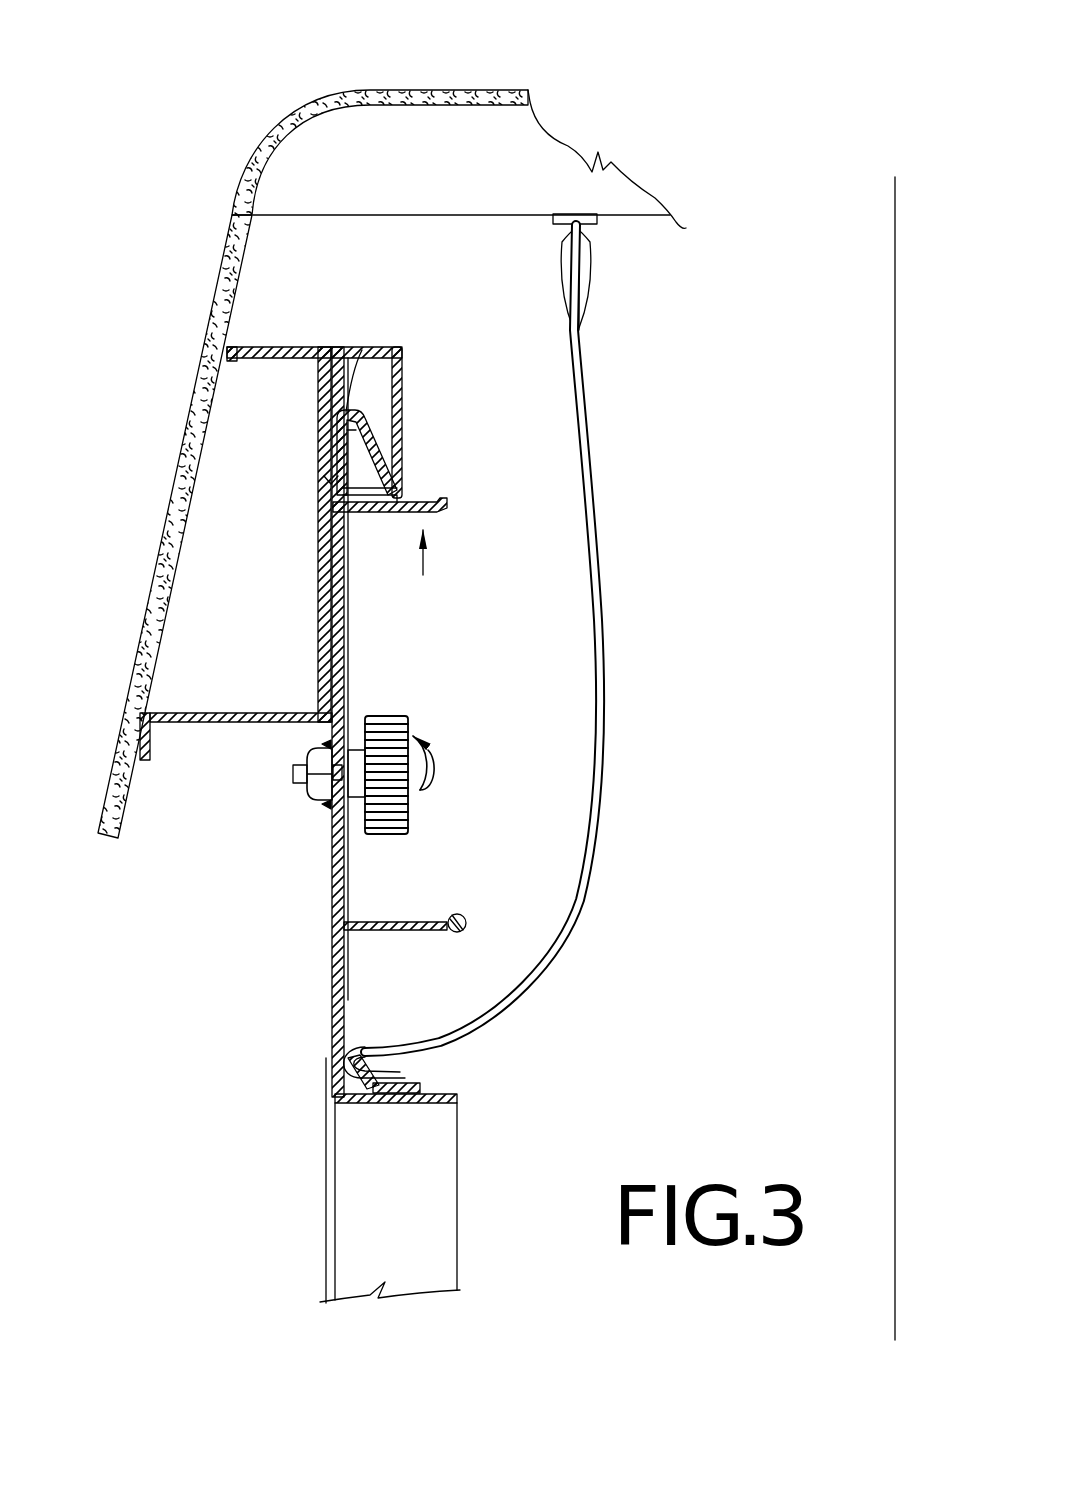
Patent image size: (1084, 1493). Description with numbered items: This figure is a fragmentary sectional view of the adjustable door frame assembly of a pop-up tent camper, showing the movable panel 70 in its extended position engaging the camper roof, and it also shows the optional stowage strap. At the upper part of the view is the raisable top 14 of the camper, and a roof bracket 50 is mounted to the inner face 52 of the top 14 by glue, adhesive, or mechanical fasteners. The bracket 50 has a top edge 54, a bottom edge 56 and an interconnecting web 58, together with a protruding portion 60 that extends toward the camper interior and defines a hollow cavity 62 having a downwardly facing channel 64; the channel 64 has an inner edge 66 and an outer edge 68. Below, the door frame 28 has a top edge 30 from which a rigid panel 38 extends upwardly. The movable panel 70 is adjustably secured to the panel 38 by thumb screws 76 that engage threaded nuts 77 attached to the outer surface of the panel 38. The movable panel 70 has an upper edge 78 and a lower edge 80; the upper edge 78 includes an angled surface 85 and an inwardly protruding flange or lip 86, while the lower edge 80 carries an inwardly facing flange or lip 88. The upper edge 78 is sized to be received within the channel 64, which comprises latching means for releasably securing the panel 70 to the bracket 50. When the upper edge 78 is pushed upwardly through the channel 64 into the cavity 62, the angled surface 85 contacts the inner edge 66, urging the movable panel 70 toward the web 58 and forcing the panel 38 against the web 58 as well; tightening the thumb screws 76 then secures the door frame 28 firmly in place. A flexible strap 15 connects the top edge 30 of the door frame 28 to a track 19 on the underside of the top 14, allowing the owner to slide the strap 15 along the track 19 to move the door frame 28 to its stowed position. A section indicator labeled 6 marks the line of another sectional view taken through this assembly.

The top portion 14 is at (382, 90).
The inner face of top 52 is at (160, 620).
The track 19 is at (607, 218).
The flexible strap 15 is at (593, 483).
The roof bracket 50 is at (378, 472).
The top edge of bracket 54 is at (270, 346).
The protruding portion 60 is at (402, 360).
The interconnecting web 58 is at (320, 515).
The upper edge of movable panel 78 is at (360, 350).
The rigid panel 38 is at (343, 996).
The bottom edge of bracket 56 is at (218, 722).
The hollow cavity 62 is at (370, 392).
The channel 64 is at (395, 462).
The angled surface 85 is at (400, 429).
The inner edge of channel 66 is at (397, 484).
The inwardly protruding flange or lip 86 is at (447, 510).
The outer edge of channel 68 is at (332, 480).
The thumb screws 76 is at (396, 717).
The movable panel 70 is at (352, 862).
The threaded nuts 77 is at (305, 805).
The lower edge of movable panel 80 is at (406, 930).
The inwardly facing flange or lip 88 is at (468, 919).
The top edge of door frame 30 is at (421, 1088).
The door frame 28 is at (462, 1162).
The section line 6 is at (803, 177).